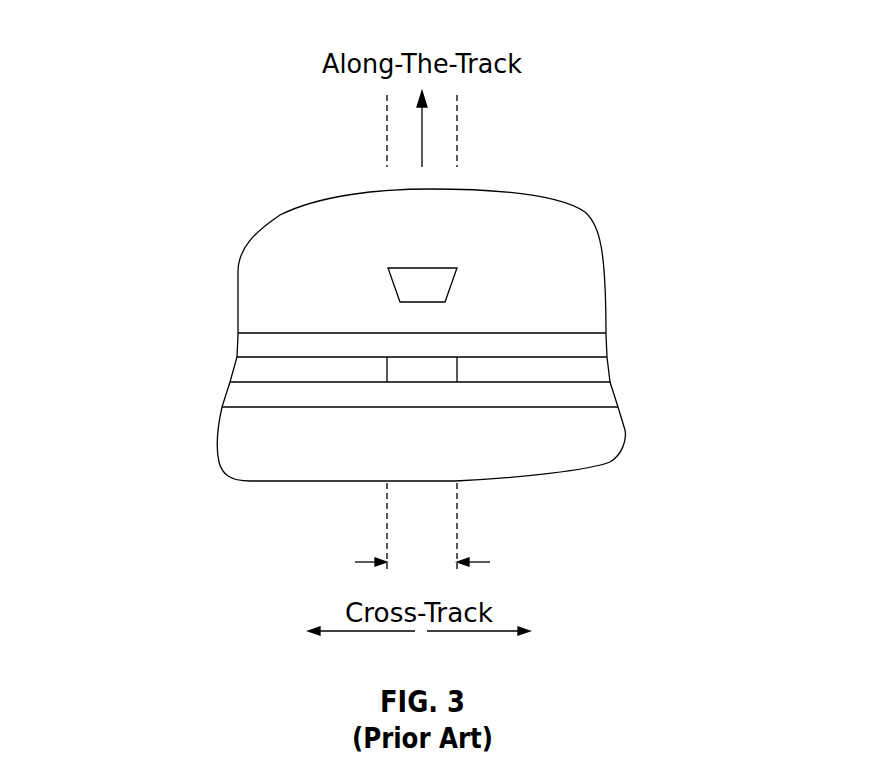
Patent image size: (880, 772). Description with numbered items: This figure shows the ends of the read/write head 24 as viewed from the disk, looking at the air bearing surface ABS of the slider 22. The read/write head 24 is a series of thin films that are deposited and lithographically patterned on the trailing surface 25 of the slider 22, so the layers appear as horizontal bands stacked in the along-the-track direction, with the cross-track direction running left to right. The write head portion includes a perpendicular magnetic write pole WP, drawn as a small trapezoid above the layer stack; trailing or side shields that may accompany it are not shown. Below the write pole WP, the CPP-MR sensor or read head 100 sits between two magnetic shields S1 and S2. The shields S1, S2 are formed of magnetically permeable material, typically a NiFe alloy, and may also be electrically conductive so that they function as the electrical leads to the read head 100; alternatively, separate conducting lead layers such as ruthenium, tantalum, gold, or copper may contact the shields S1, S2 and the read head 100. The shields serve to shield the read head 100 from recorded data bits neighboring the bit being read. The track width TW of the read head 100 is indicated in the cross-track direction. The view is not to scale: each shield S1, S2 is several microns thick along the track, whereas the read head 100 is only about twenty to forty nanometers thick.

The slider 22 is at (253, 470).
The read/write head 24 is at (178, 270).
The trailing surface 25 is at (232, 407).
The read head 100 is at (445, 373).
The magnetic shield S1 is at (310, 403).
The magnetic shield S2 is at (597, 347).
The write pole WP is at (452, 285).
The air bearing surface ABS is at (300, 226).
The track width TW is at (398, 531).